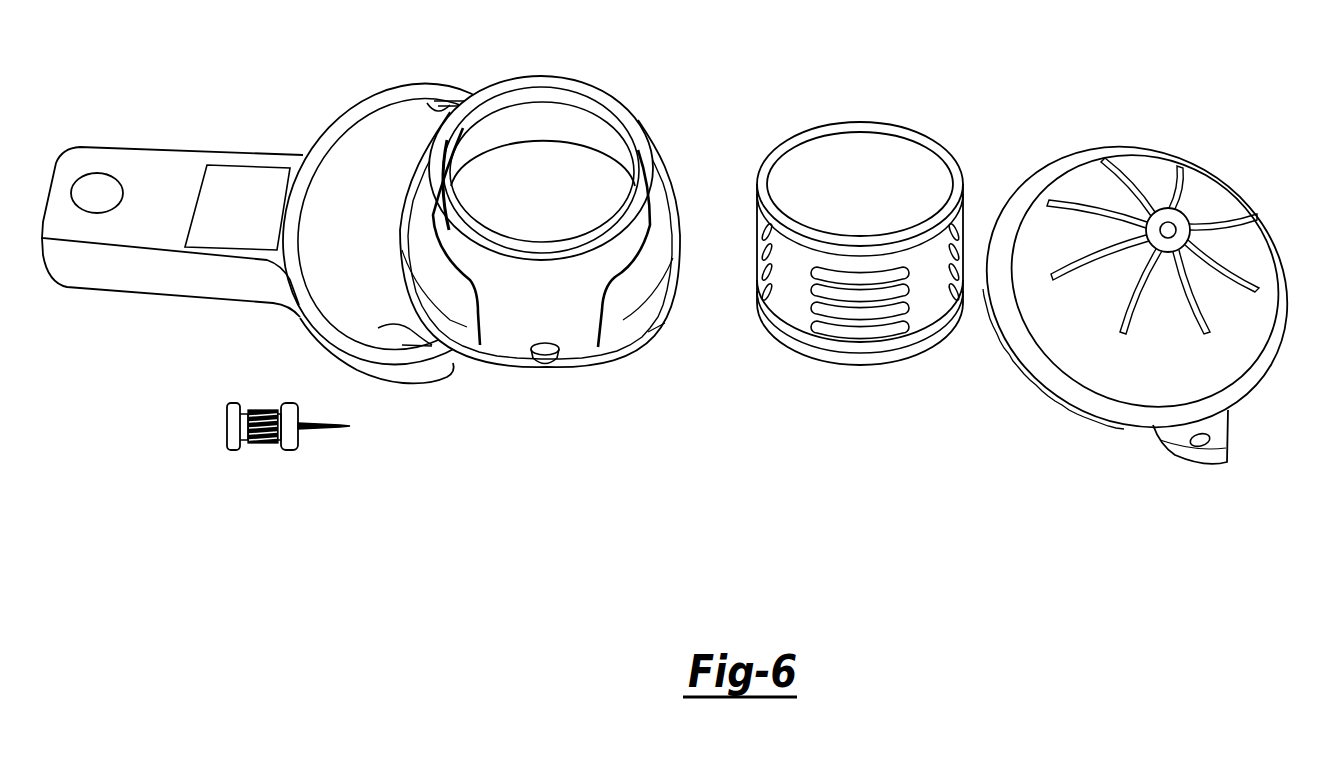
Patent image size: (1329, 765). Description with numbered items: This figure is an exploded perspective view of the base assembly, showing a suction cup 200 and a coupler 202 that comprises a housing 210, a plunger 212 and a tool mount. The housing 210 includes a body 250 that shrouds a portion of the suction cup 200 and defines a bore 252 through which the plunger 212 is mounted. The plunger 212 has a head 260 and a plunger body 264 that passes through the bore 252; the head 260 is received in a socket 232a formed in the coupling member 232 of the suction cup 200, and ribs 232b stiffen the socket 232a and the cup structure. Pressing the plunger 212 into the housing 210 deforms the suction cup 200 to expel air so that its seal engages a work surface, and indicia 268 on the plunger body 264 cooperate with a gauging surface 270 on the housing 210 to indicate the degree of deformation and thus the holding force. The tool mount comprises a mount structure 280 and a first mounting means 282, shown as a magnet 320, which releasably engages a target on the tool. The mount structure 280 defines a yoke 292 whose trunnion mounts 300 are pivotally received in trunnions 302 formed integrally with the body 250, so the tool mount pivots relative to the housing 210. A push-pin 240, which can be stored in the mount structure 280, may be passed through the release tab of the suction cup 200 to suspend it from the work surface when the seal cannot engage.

The suction cup 200 is at (1132, 280).
The coupler 202 is at (184, 147).
The housing 210 is at (545, 230).
The plunger 212 is at (820, 211).
The coupling member 232 is at (1168, 255).
The socket 232a is at (1160, 238).
The ribs 232b is at (1140, 297).
The push-pin 240 is at (256, 437).
The body 250 is at (420, 238).
The bore 252 is at (592, 150).
The head 260 is at (888, 145).
The plunger body 264 is at (820, 313).
The indicia 268 is at (888, 312).
The gauging surface 270 is at (515, 83).
The mount structure 280 is at (162, 157).
The first mounting means 282 is at (86, 188).
The yoke 292 is at (400, 374).
The trunnion mounts 300 is at (437, 112).
The trunnions 302 is at (545, 365).
The magnet 320 is at (98, 180).